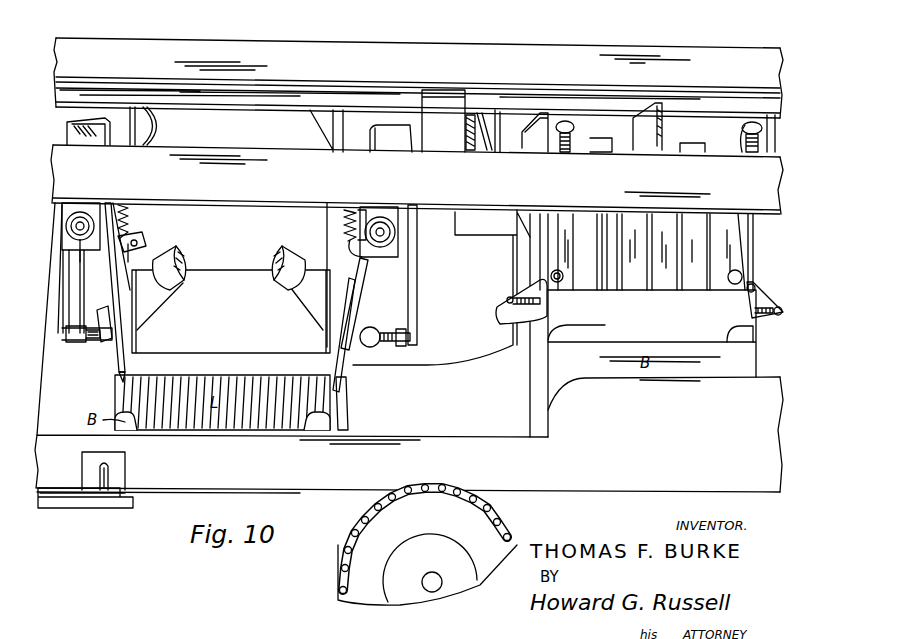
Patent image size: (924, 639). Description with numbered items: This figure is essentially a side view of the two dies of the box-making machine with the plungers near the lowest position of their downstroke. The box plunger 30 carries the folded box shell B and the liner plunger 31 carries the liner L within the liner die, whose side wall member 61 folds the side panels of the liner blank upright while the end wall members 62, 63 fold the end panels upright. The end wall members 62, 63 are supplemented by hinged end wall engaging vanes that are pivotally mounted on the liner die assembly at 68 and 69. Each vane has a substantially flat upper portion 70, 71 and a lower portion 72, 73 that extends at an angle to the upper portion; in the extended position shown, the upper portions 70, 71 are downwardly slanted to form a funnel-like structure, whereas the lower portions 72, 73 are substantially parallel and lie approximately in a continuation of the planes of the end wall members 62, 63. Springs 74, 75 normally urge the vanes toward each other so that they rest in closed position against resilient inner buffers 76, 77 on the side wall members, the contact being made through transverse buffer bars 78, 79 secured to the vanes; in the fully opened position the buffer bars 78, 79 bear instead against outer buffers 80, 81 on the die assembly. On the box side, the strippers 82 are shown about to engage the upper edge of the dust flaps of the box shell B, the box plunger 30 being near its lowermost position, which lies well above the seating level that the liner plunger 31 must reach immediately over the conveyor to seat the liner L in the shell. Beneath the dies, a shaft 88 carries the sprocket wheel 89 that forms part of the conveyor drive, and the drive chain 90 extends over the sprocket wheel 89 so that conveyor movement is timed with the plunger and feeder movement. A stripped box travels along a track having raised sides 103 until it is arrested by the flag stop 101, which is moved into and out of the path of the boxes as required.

The box plunger 30 is at (651, 326).
The liner plunger 31 is at (210, 372).
The side wall member 61 is at (236, 328).
The end wall member 62 is at (148, 127).
The end wall member 63 is at (348, 210).
The pivot mounting 68 is at (74, 226).
The pivot mounting 69 is at (384, 235).
The upper portion of vane 70 is at (114, 306).
The upper portion of vane 71 is at (360, 302).
The lower portion of vane 72 is at (118, 373).
The lower portion of vane 73 is at (342, 383).
The spring 74 is at (145, 238).
The spring 75 is at (363, 208).
The inner buffer 76 is at (172, 287).
The inner buffer 77 is at (280, 287).
The buffer bar 78 is at (97, 309).
The buffer bar 79 is at (350, 332).
The outer buffer 80 is at (108, 348).
The outer buffer 81 is at (370, 328).
The stripper 82 is at (527, 291).
The shaft 88 is at (430, 579).
The sprocket wheel 89 is at (467, 533).
The drive chain 90 is at (512, 538).
The flag stop 101 is at (110, 478).
The raised sides of track 103 is at (266, 470).